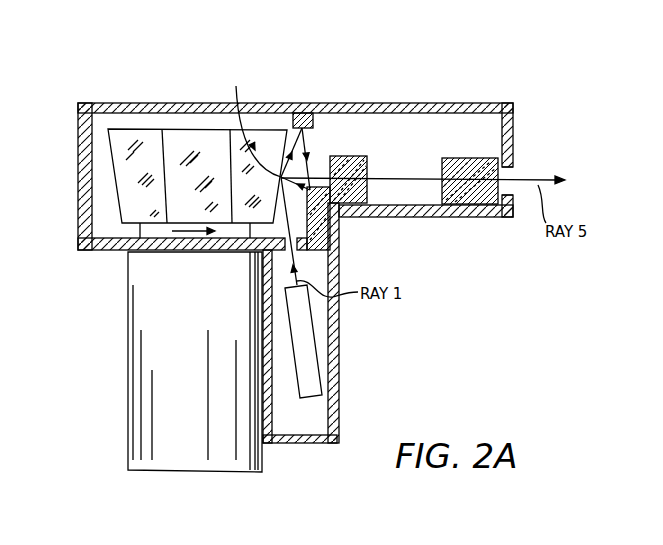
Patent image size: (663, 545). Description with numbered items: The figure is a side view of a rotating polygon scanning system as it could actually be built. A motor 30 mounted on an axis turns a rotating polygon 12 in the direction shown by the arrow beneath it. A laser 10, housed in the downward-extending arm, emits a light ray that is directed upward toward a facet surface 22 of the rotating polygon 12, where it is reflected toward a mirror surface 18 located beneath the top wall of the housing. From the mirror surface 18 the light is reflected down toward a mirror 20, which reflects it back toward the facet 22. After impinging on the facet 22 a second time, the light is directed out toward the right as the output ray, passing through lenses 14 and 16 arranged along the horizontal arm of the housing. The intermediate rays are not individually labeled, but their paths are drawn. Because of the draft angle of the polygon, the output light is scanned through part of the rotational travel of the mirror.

The laser 10 is at (298, 386).
The rotating polygon 12 is at (127, 128).
The lens 14 is at (358, 156).
The lens 16 is at (442, 158).
The mirror surface 18 is at (295, 113).
The mirror 20 is at (327, 230).
The facet surface 22 is at (246, 122).
The motor 30 is at (128, 392).